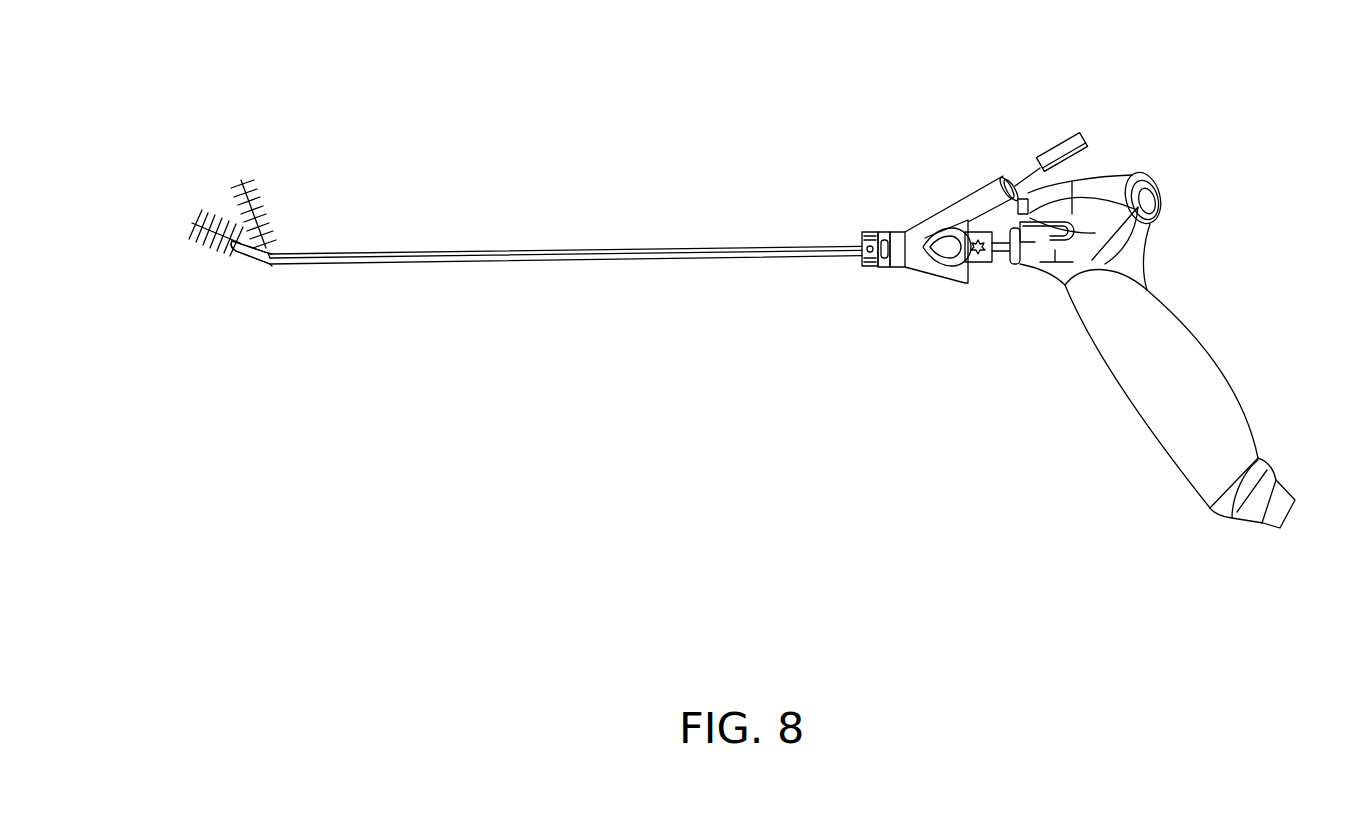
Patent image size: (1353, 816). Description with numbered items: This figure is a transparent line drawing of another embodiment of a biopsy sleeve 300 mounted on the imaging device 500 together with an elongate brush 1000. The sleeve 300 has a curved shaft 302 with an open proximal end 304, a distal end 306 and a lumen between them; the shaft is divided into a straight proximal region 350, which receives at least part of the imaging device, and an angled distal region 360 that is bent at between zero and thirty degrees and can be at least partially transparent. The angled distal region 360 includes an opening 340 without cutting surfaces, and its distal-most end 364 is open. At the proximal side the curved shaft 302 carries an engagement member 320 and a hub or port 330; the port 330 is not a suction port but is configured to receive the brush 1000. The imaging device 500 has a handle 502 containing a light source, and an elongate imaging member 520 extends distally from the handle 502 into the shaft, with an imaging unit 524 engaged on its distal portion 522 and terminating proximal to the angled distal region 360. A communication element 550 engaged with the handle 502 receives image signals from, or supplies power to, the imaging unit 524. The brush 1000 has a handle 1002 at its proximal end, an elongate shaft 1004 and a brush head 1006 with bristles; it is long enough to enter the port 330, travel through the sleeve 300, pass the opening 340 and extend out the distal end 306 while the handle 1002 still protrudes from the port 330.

The sleeve 300 is at (588, 203).
The curved shaft 302 is at (285, 253).
The proximal end 304 is at (863, 233).
The distal end 306 is at (240, 237).
The engagement member 320 is at (923, 193).
The port 330 is at (988, 180).
The opening 340 is at (275, 211).
The straight proximal region 350 is at (852, 323).
The angled distal region 360 is at (262, 267).
The distal-most end 364 is at (214, 261).
The imaging device 500 is at (1007, 360).
The handle 502 is at (1113, 387).
The elongate imaging member 520 is at (493, 263).
The distal portion 522 is at (322, 230).
The imaging unit 524 is at (283, 266).
The communication element 550 is at (1148, 182).
The elongate brush 1000 is at (1017, 151).
The handle 1002 is at (1062, 140).
The elongate shaft 1004 is at (713, 247).
The brush head 1006 is at (247, 183).